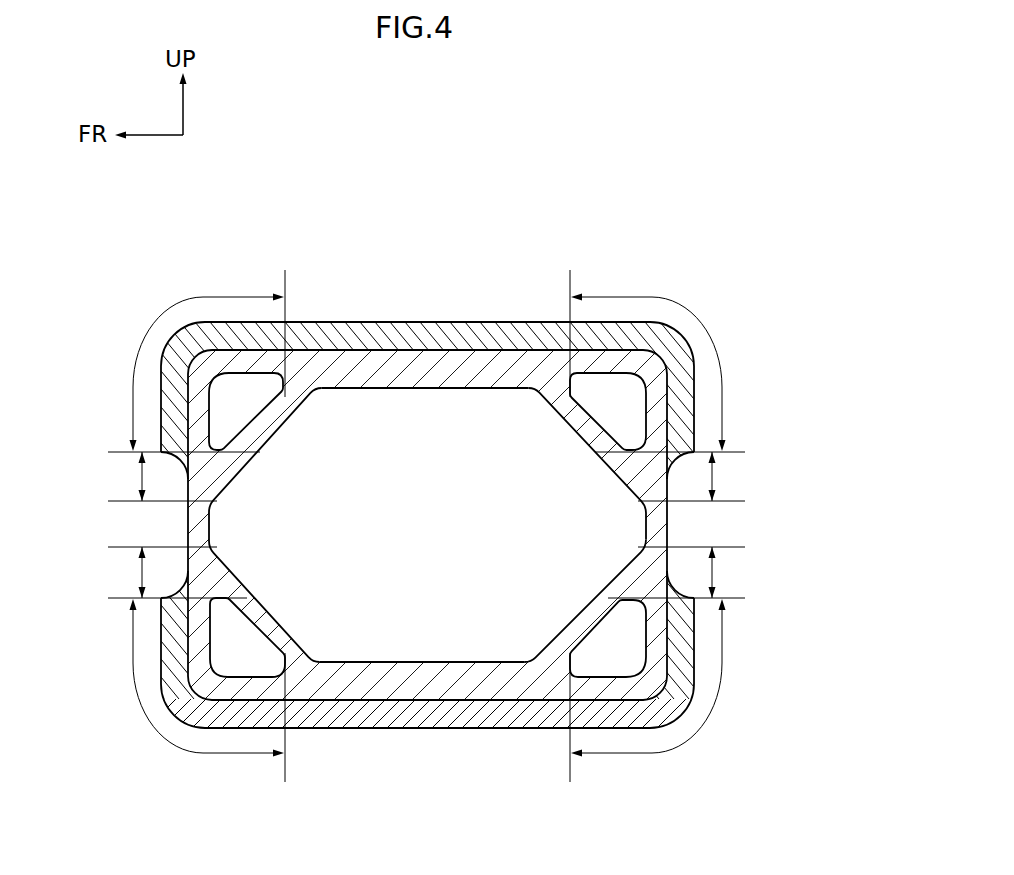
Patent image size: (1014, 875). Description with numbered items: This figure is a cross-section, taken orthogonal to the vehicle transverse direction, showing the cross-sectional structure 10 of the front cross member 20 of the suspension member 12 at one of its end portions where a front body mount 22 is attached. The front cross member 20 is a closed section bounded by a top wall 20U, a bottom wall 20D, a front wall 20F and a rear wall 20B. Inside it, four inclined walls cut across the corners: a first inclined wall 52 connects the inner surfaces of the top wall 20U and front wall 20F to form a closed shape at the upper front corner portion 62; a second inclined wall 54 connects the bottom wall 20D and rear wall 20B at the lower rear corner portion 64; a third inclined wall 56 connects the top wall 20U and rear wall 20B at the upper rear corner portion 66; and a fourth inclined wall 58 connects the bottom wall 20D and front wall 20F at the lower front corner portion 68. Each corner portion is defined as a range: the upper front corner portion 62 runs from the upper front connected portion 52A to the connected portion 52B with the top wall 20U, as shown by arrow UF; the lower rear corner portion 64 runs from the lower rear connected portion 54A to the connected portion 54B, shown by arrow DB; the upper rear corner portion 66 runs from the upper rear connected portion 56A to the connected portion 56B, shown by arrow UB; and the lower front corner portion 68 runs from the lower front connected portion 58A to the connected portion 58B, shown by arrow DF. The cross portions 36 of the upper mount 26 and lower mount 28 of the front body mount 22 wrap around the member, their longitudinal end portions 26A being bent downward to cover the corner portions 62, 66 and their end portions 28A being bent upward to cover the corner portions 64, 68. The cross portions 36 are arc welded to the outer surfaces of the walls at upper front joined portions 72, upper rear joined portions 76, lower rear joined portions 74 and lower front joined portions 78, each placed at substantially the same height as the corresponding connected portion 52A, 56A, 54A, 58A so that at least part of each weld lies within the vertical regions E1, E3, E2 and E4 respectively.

The cross-sectional structure 10 is at (378, 490).
The suspension member 12 is at (475, 304).
The front cross member 20 is at (638, 358).
The top wall 20U is at (432, 356).
The bottom wall 20D is at (417, 683).
The front wall 20F is at (197, 518).
The rear wall 20B is at (662, 520).
The front body mount 22 is at (429, 514).
The upper mount 26 is at (232, 320).
The vehicle body longitudinal direction both end portions of upper mount 26A is at (170, 393).
The lower mount 28 is at (318, 728).
The vehicle body longitudinal direction both end portions of lower mount 28A is at (163, 651).
The cross portion 36 is at (353, 321).
The first inclined wall 52 is at (265, 428).
The upper front connected portion 52A is at (218, 472).
The connected portion of first inclined wall and top wall 52B is at (298, 392).
The second inclined wall 54 is at (580, 620).
The lower rear connected portion 54A is at (643, 583).
The connected portion of second inclined wall and bottom wall 54B is at (543, 660).
The third inclined wall 56 is at (588, 437).
The upper rear connected portion 56A is at (628, 480).
The connected portion of third inclined wall and top wall 56B is at (570, 392).
The fourth inclined wall 58 is at (273, 614).
The lower front connected portion 58A is at (228, 568).
The connected portion of fourth inclined wall and bottom wall 58B is at (313, 653).
The upper front corner portion 62 is at (170, 345).
The lower rear corner portion 64 is at (684, 713).
The upper rear corner portion 66 is at (690, 378).
The lower front corner portion 68 is at (177, 716).
The upper front joined portion 72 is at (165, 455).
The lower rear joined portion 74 is at (686, 594).
The upper rear joined portion 76 is at (680, 464).
The lower front joined portion 78 is at (168, 595).
The region of upper front connected portion E1 is at (145, 478).
The region of lower rear connected portion E2 is at (716, 573).
The region of upper rear connected portion E3 is at (716, 476).
The region of lower front connected portion E4 is at (142, 574).
The arrow UF is at (152, 322).
The arrow UB is at (702, 321).
The arrow DF is at (140, 712).
The arrow DB is at (720, 706).